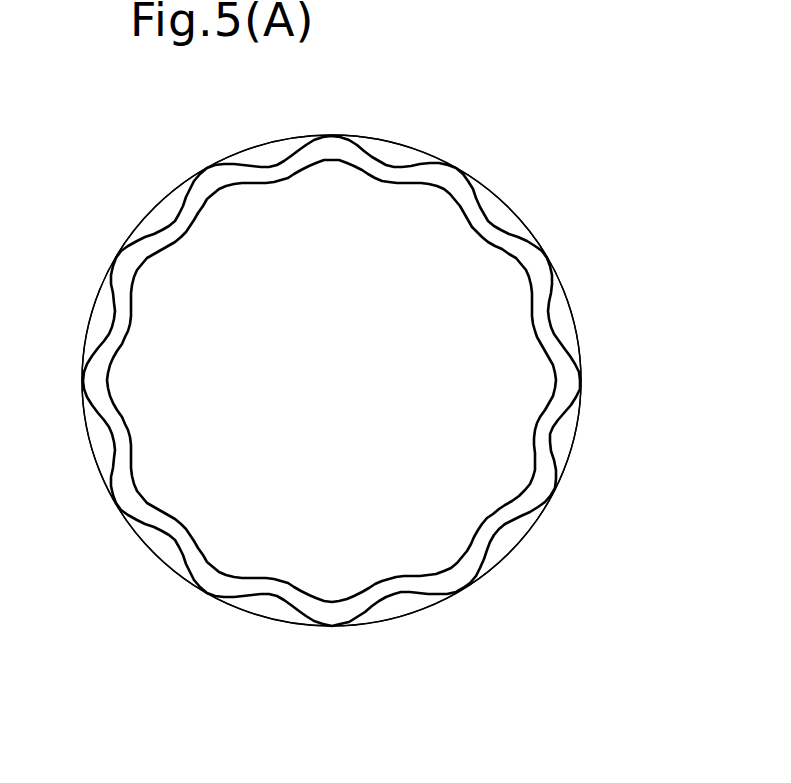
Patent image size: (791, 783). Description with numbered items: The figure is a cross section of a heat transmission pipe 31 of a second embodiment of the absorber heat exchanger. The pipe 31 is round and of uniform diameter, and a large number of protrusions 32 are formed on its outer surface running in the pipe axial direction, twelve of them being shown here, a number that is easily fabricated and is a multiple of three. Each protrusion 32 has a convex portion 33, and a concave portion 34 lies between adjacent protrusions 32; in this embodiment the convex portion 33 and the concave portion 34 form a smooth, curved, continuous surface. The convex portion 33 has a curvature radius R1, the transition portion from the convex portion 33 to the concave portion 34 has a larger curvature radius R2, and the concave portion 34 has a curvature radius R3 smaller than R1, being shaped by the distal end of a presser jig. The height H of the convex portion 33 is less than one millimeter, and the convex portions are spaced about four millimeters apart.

The heat transmission pipe 31 is at (397, 157).
The protrusion 32 is at (458, 168).
The convex portion 33 is at (473, 197).
The concave portion 34 is at (513, 212).
The height of the convex portion H is at (433, 280).
The curvature radius of the convex portion R1 is at (331, 137).
The curvature radius of the transition portion R2 is at (137, 236).
The curvature radius of the concave portion R3 is at (273, 168).